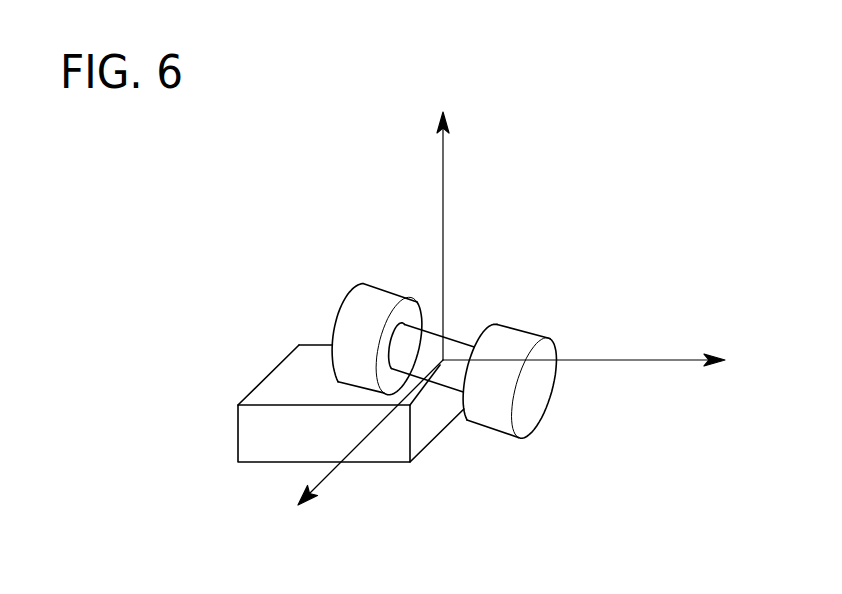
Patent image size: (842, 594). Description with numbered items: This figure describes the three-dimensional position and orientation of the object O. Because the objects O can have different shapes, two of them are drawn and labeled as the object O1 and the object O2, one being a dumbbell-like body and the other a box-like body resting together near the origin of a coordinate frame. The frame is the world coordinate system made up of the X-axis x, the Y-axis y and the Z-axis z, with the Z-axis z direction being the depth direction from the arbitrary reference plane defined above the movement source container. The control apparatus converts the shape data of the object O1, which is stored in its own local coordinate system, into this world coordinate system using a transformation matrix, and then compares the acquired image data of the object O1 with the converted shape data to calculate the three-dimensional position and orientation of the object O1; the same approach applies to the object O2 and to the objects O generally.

The object O is at (394, 334).
The object O1 is at (522, 332).
The object O2 is at (265, 377).
The X-axis x is at (361, 446).
The Y-axis y is at (595, 359).
The Z-axis z is at (443, 222).